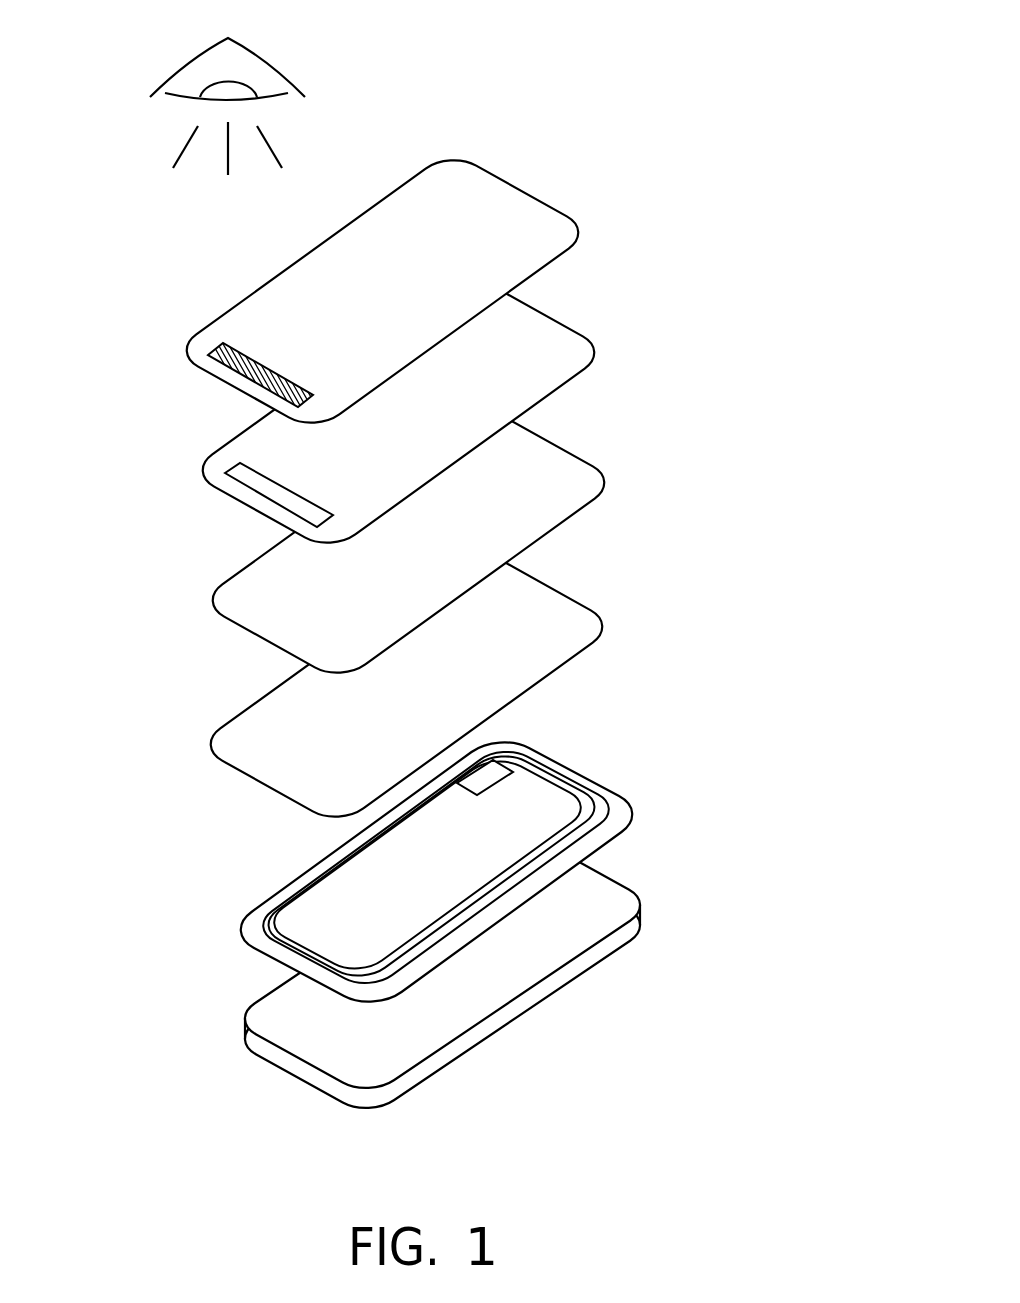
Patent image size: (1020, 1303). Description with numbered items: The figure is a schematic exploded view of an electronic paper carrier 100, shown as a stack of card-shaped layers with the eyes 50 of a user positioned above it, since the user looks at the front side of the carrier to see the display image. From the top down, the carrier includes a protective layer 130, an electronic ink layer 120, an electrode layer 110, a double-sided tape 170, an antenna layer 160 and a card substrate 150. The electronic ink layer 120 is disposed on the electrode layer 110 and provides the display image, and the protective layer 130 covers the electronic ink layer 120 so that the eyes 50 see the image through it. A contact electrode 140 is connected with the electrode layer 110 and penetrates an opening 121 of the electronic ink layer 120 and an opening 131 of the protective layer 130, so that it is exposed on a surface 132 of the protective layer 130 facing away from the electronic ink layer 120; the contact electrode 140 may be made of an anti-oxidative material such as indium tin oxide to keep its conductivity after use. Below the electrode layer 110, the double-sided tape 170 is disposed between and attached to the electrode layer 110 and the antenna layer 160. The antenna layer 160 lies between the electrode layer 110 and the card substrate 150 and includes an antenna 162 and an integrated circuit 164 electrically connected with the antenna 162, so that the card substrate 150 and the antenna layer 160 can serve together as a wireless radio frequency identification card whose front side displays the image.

The electronic paper carrier 100 is at (737, 1138).
The eyes of a user 50 is at (207, 64).
The electrode layer 110 is at (555, 515).
The electronic ink layer 120 is at (418, 411).
The opening of the electronic ink layer 121 is at (300, 498).
The protective layer 130 is at (390, 291).
The opening of the protective layer 131 is at (278, 379).
The surface of the protective layer 132 is at (259, 314).
The contact electrode 140 is at (233, 361).
The card substrate 150 is at (260, 1012).
The antenna layer 160 is at (461, 856).
The antenna 162 is at (593, 818).
The integrated circuit 164 is at (500, 766).
The double-sided tape 170 is at (555, 661).